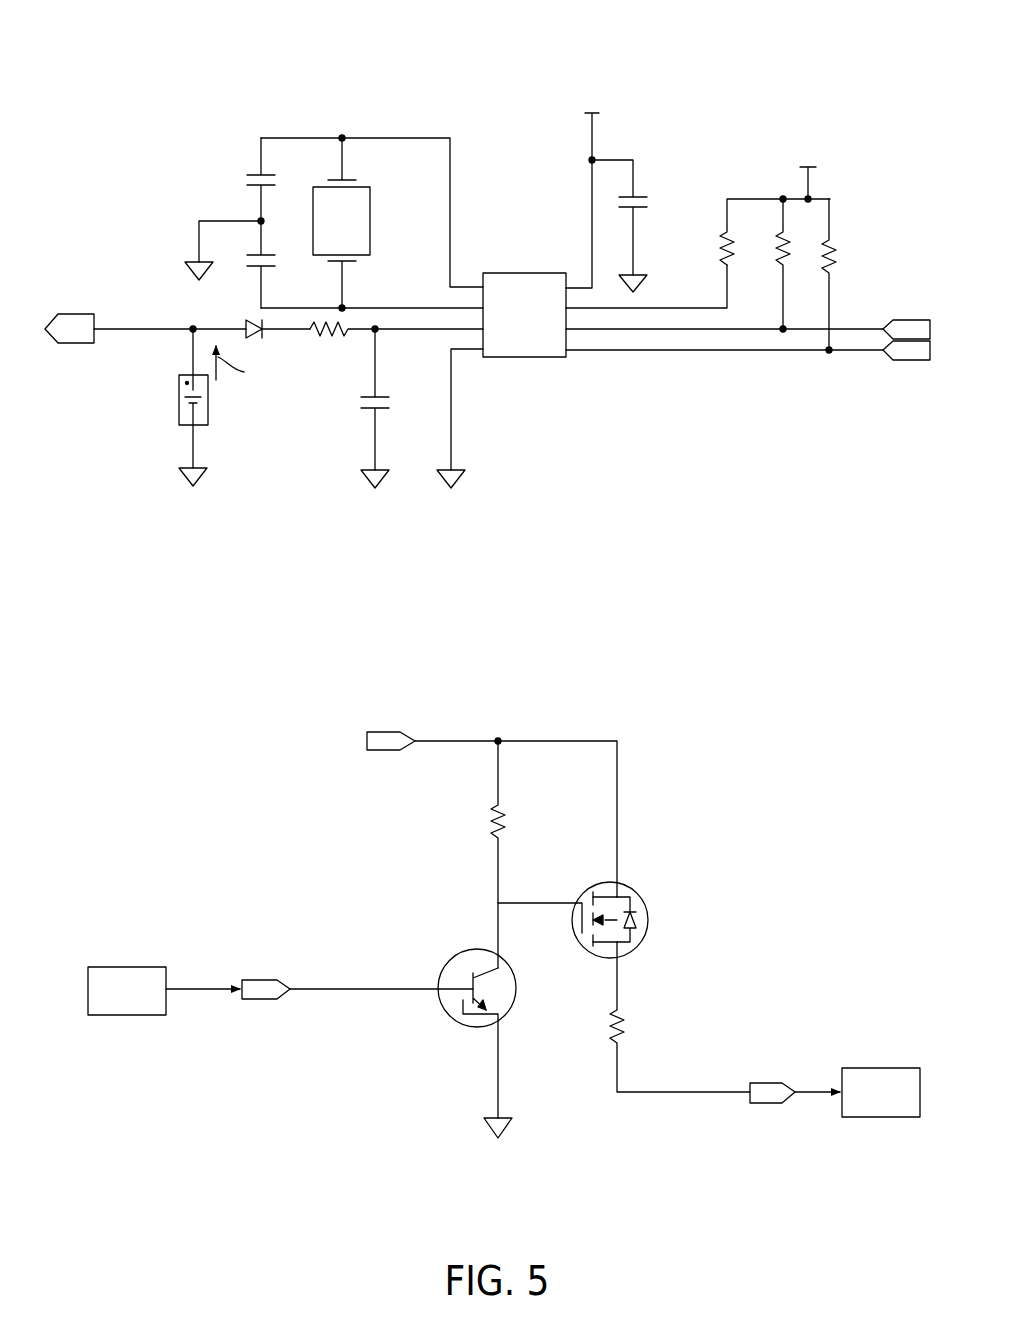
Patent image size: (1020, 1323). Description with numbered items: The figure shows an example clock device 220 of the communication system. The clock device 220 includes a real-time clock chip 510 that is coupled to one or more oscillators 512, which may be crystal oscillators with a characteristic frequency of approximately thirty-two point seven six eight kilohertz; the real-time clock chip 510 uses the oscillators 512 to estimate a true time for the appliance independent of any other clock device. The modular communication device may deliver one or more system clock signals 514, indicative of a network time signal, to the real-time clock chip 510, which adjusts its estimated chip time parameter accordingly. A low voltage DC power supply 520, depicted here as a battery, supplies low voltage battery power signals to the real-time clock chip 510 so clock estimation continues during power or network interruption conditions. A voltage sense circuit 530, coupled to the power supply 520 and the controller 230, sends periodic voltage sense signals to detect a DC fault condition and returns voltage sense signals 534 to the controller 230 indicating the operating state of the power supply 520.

The oscillators 512 is at (232, 66).
The real-time clock chip 510 is at (524, 315).
The system clock signals 514 is at (926, 304).
The low voltage direct-current power supply 520 is at (146, 397).
The clock device 220 is at (245, 548).
The voltage sense circuit 530 is at (662, 664).
The voltage sense signals 534 is at (766, 1082).
The controller 230 is at (504, 1042).